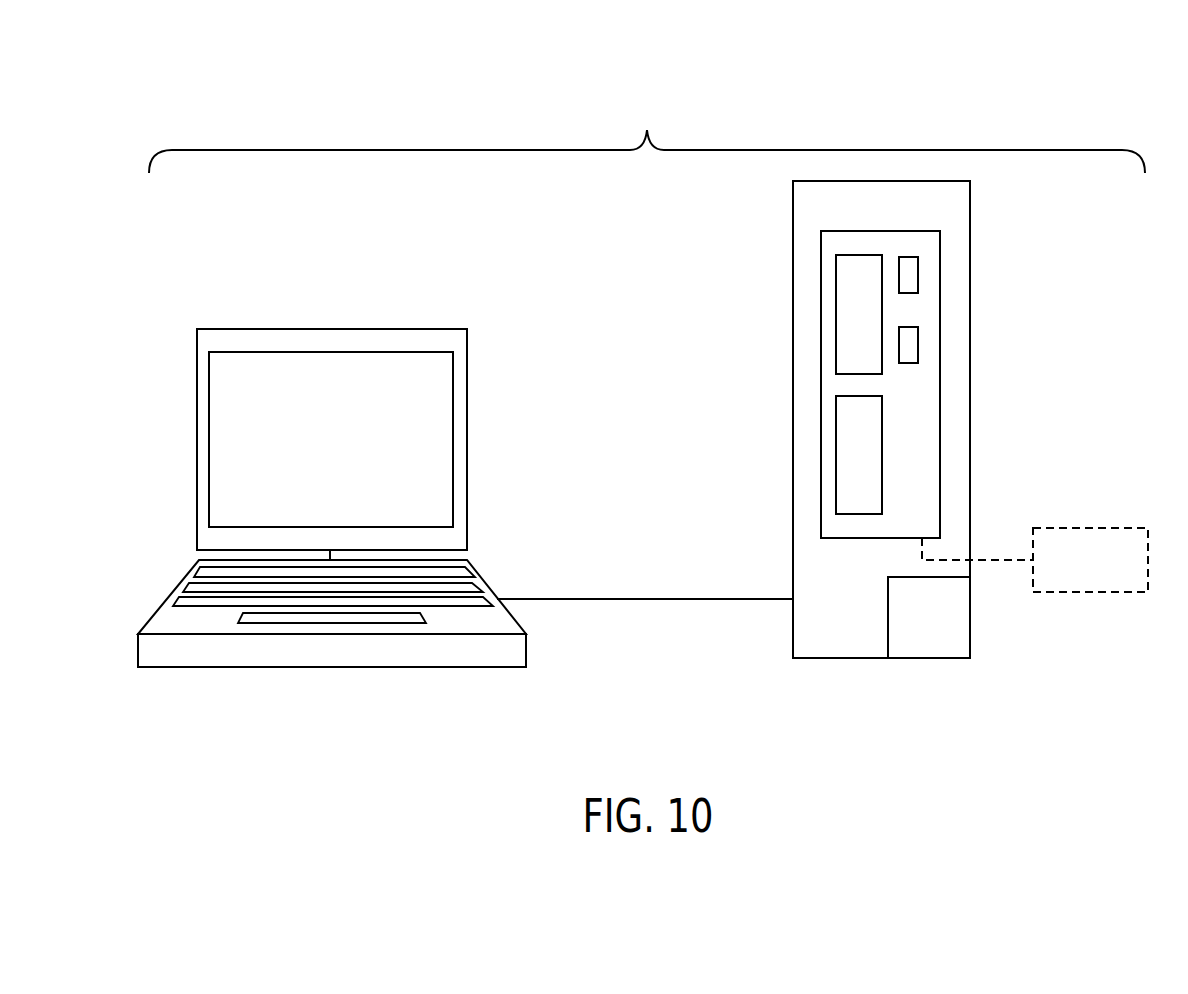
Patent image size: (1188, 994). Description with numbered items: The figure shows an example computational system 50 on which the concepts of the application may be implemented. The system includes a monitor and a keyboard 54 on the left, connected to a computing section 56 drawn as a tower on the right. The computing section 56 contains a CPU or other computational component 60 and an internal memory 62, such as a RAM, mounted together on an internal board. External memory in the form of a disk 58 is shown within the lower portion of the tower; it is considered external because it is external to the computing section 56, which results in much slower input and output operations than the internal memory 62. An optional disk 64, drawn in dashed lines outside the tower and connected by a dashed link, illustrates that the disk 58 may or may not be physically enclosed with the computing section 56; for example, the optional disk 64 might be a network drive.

The computational system 50 is at (560, 235).
The keyboard 54 is at (308, 667).
The computing section 56 is at (970, 263).
The disk 58 is at (927, 645).
The CPU or other computational component 60 is at (837, 315).
The internal memory 62 is at (837, 455).
The optional disk 64 is at (1093, 528).